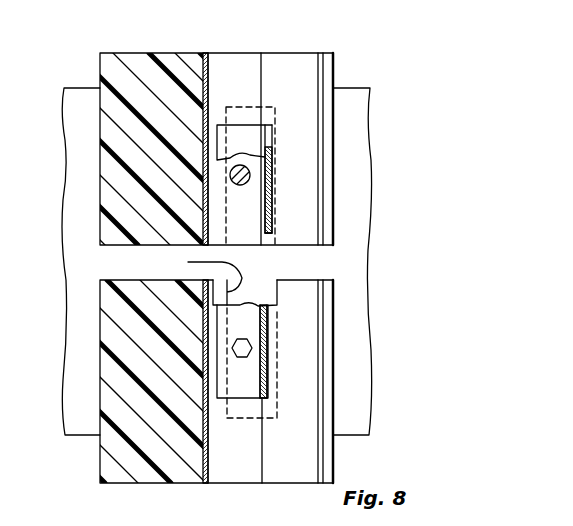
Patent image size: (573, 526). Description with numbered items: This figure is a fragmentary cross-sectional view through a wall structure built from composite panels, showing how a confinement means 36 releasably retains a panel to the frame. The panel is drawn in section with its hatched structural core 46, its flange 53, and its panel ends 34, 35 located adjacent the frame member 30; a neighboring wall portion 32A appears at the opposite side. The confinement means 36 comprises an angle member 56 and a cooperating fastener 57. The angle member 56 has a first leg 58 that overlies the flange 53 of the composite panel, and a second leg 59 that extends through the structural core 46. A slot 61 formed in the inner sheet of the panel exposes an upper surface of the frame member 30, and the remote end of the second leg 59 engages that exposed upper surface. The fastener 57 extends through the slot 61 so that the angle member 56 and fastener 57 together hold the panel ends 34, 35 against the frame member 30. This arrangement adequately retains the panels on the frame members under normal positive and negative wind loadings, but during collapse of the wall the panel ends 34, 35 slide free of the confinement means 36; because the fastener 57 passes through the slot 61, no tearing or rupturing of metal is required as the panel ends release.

The frame member 30 is at (80, 336).
The wall 32A is at (352, 80).
The panel end 34 is at (160, 53).
The structural core 46 is at (110, 72).
The flange 53 is at (233, 63).
The panel end 35 is at (308, 470).
The confinement means 36 is at (248, 124).
The first leg 58 is at (255, 140).
The angle member 56 is at (275, 155).
The fastener 57 is at (250, 182).
The second leg 59 is at (273, 227).
The slot 61 is at (230, 243).